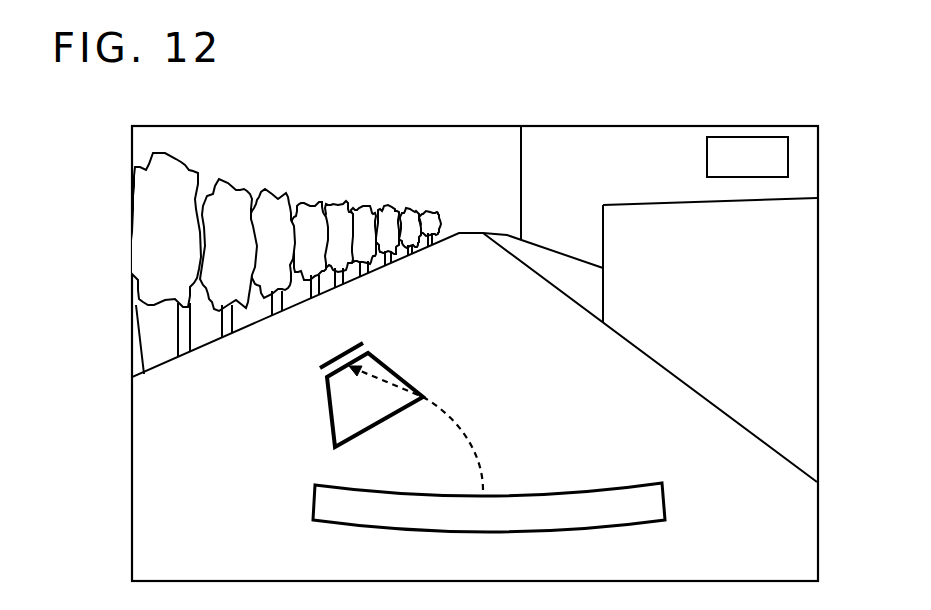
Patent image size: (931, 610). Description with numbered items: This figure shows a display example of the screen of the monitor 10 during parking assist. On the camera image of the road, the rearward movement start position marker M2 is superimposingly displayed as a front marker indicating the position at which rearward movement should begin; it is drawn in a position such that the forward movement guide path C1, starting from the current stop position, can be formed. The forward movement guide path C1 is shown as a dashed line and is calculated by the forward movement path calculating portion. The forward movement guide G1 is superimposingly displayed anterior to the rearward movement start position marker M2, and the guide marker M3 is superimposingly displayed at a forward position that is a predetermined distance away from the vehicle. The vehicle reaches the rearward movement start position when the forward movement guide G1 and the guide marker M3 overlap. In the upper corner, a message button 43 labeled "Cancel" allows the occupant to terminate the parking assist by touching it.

The monitor 10 is at (130, 223).
The message button 43 is at (707, 158).
The forward movement guide G1 is at (334, 362).
The rearward movement start position marker M2 is at (327, 406).
The forward movement guide path C1 is at (462, 433).
The guide marker M3 is at (590, 487).